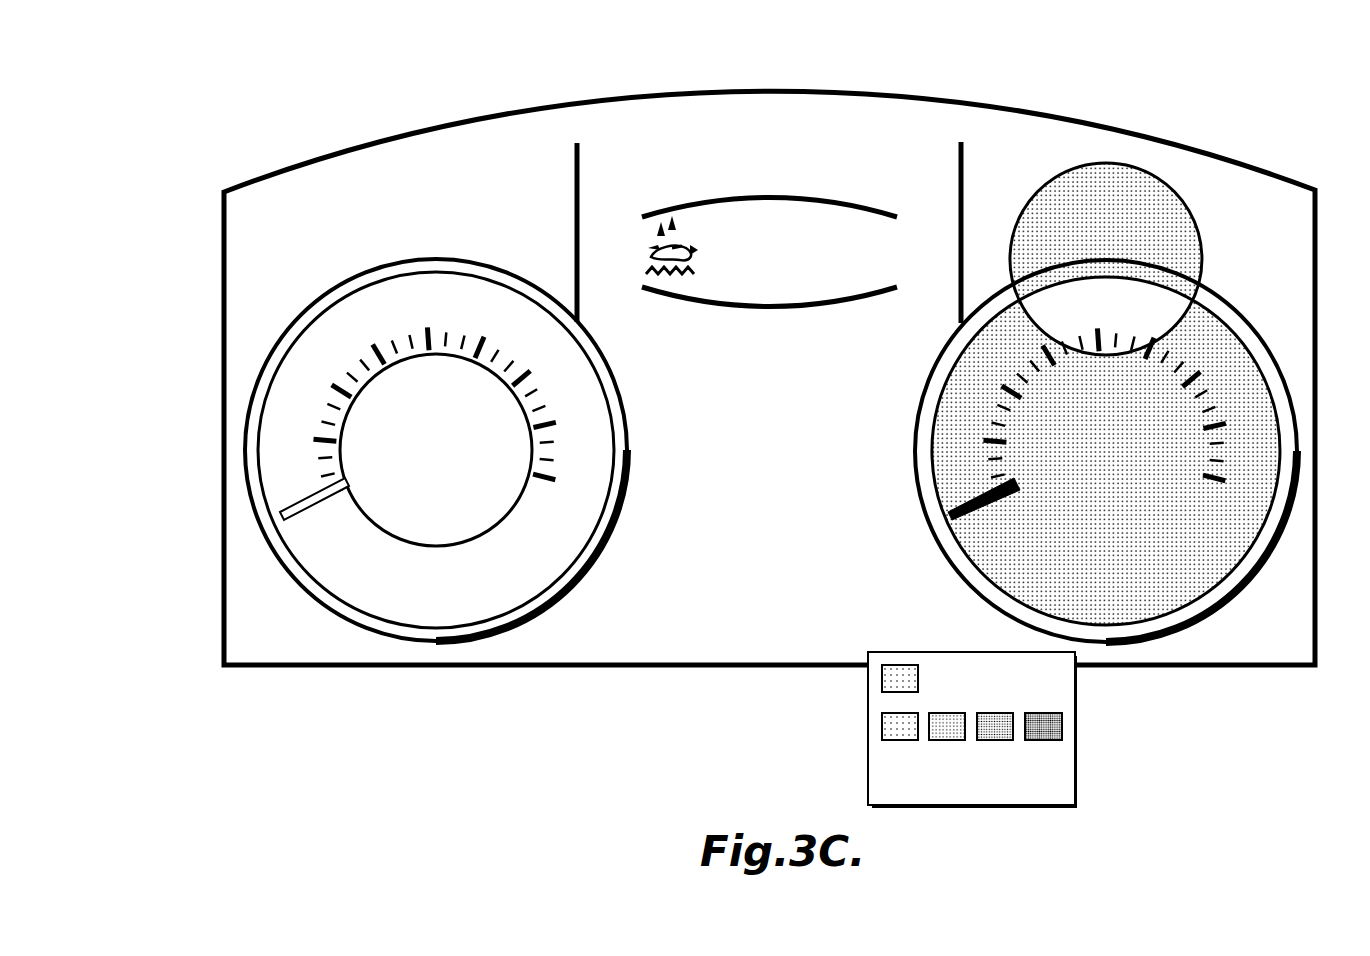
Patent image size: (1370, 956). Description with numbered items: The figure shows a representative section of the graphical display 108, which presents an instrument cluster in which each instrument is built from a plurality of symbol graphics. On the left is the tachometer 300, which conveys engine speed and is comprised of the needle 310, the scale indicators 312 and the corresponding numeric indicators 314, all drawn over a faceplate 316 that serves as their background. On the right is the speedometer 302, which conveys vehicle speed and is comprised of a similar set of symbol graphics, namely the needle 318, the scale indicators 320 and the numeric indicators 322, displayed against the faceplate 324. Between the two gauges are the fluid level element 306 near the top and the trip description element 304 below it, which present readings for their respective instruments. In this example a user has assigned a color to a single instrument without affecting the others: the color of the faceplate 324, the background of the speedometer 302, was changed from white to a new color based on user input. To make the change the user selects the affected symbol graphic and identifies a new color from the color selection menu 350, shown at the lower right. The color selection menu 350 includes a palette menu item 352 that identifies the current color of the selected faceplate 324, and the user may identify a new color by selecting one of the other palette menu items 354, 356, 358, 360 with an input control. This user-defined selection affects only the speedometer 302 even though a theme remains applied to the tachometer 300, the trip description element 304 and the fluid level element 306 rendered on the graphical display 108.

The graphical display 108 is at (312, 124).
The tachometer 300 is at (250, 381).
The speedometer 302 is at (1290, 351).
The trip description element 304 is at (703, 465).
The fluid level element 306 is at (814, 192).
The needle 310 is at (281, 506).
The scale indicators 312 is at (540, 380).
The numeric indicators 314 is at (497, 300).
The faceplate 316 is at (332, 553).
The needle 318 is at (950, 516).
The scale indicators 320 is at (1005, 408).
The numeric indicators 322 is at (1165, 305).
The faceplate 324 is at (1215, 572).
The color selection menu 350 is at (1078, 693).
The palette menu item 352 is at (882, 683).
The palette menu item 354 is at (882, 737).
The palette menu item 356 is at (950, 741).
The palette menu item 358 is at (1010, 741).
The palette menu item 360 is at (1063, 726).